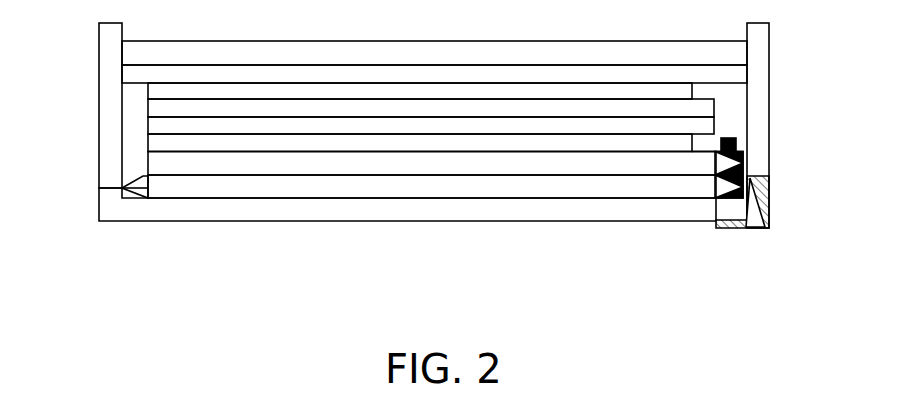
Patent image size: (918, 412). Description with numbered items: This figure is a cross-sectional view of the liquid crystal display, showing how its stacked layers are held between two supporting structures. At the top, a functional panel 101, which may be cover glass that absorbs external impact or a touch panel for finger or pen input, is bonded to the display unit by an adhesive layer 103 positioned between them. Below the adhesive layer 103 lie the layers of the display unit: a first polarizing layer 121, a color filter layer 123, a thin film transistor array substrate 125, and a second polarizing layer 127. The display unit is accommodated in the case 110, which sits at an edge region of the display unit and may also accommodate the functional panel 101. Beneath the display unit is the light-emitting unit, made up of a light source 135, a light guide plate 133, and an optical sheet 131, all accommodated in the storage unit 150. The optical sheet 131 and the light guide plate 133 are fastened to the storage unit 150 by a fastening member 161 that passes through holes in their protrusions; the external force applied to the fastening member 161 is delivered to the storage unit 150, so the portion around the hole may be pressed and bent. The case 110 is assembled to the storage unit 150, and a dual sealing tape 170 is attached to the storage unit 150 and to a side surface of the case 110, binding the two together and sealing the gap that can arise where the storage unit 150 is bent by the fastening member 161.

The functional panel 101 is at (725, 50).
The adhesive layer 103 is at (725, 75).
The case 110 is at (99, 132).
The first polarizing layer 121 is at (670, 92).
The color filter layer 123 is at (695, 107).
The thin film transistor (TFT) array substrate 125 is at (700, 125).
The second polarizing layer 127 is at (400, 143).
The optical sheet 131 is at (333, 162).
The light guide plate 133 is at (287, 187).
The light source 135 is at (131, 198).
The storage unit 150 is at (228, 206).
The fastening member 161 is at (740, 145).
The dual sealing tape 170 is at (755, 230).